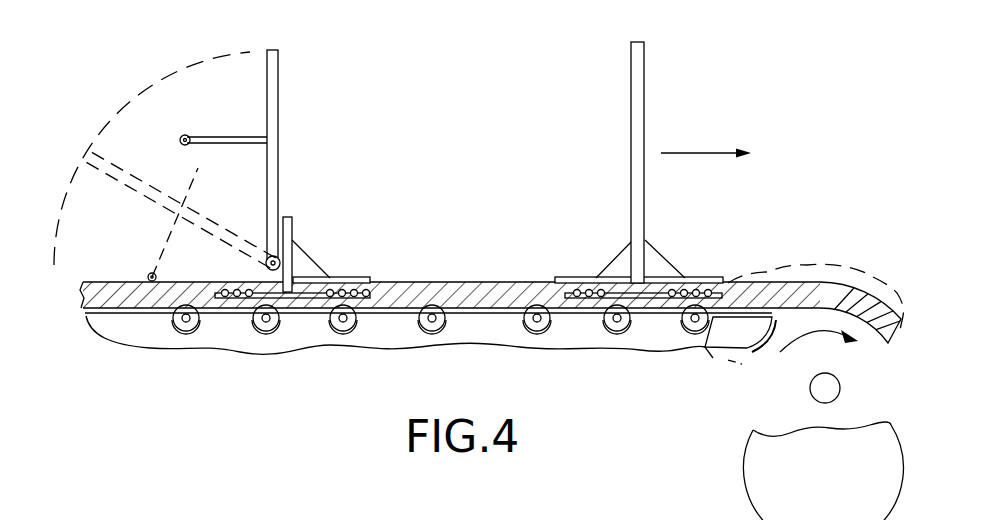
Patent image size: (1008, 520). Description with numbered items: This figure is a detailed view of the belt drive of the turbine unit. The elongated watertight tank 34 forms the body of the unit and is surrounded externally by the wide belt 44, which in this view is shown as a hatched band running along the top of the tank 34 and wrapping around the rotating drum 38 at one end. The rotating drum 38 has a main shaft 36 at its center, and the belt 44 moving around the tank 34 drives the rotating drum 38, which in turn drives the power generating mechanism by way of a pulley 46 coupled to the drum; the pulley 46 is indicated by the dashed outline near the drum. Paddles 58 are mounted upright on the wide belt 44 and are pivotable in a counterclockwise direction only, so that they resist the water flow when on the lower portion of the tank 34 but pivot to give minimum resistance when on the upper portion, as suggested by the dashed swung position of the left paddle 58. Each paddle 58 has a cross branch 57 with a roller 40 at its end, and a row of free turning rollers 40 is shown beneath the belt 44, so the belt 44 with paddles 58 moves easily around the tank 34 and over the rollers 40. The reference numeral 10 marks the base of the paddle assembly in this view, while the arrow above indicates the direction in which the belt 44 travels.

The pusher bracket assembly 10 is at (347, 262).
The elongated watertight tank 34 is at (165, 336).
The main shaft 36 is at (826, 399).
The rotating drum 38 is at (763, 383).
The roller 40 is at (187, 134).
The wide belt 44 is at (522, 279).
The pulley 46 is at (815, 264).
The cross branch 57 is at (205, 144).
The paddles 58 is at (267, 163).